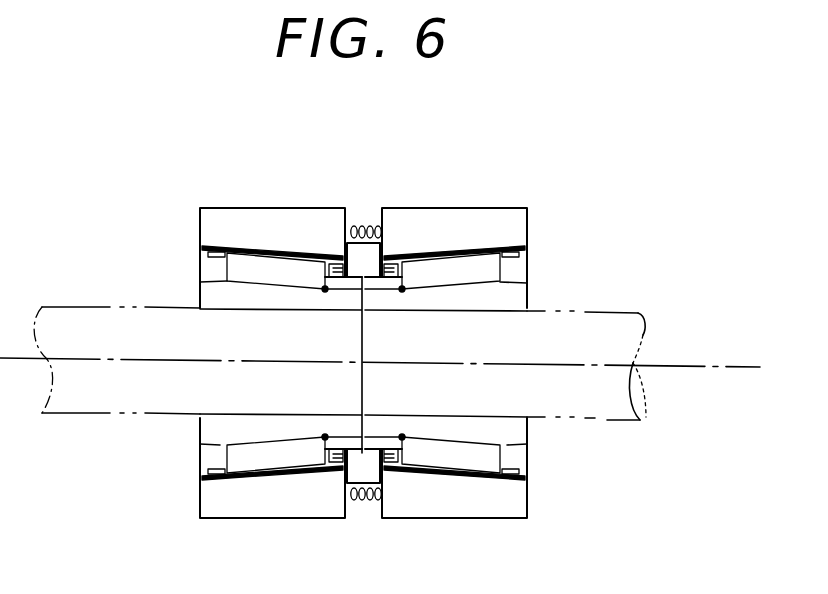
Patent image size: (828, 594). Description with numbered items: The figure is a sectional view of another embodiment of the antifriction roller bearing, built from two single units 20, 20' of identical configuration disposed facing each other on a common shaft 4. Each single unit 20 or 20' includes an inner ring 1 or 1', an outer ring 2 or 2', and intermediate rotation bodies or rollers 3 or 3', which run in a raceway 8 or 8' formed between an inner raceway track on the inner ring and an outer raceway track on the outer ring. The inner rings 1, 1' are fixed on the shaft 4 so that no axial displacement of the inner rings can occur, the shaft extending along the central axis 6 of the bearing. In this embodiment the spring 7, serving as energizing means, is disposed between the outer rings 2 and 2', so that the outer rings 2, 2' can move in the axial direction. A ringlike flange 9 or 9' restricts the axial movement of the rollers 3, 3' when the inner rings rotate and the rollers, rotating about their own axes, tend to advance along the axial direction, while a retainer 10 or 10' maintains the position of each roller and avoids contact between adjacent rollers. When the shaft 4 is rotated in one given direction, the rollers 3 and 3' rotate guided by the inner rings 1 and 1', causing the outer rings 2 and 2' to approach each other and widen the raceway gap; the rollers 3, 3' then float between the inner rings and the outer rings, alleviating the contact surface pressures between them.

The inner ring 1 is at (281, 365).
The inner ring 1' is at (446, 363).
The outer ring 2 is at (281, 224).
The outer ring 2' is at (450, 226).
The rollers 3 is at (268, 219).
The rollers 3' is at (458, 219).
The shaft 4 is at (611, 418).
The central axis 6 is at (737, 370).
The spring 7 is at (376, 228).
The raceway 8 is at (178, 477).
The raceway 8' is at (540, 478).
The flange 9 is at (277, 503).
The flange 9' is at (449, 504).
The retainer 10 is at (272, 495).
The retainer 10' is at (448, 495).
The single unit 20 is at (272, 199).
The single unit 20' is at (454, 194).